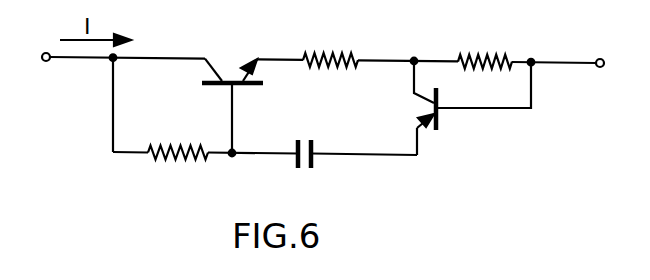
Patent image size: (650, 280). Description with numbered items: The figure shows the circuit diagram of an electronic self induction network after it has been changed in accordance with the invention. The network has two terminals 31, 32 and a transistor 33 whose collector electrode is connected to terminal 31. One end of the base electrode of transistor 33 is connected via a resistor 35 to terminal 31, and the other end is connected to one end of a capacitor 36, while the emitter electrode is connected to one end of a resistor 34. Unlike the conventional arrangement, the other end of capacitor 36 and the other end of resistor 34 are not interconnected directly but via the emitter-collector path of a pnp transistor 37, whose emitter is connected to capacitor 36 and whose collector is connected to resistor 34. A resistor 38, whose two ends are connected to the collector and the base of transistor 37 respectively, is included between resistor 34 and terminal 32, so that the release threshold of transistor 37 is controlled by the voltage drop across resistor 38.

The terminal 31 is at (42, 56).
The terminal 32 is at (600, 58).
The transistor 33 is at (227, 80).
The resistor 34 is at (333, 54).
The resistor 35 is at (199, 162).
The capacitor 36 is at (294, 168).
The pnp transistor 37 is at (427, 105).
The resistor 38 is at (496, 56).